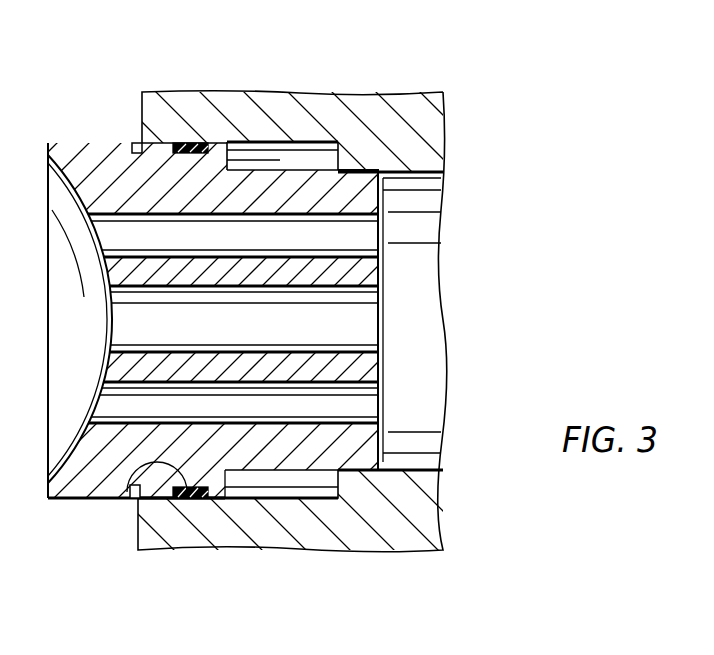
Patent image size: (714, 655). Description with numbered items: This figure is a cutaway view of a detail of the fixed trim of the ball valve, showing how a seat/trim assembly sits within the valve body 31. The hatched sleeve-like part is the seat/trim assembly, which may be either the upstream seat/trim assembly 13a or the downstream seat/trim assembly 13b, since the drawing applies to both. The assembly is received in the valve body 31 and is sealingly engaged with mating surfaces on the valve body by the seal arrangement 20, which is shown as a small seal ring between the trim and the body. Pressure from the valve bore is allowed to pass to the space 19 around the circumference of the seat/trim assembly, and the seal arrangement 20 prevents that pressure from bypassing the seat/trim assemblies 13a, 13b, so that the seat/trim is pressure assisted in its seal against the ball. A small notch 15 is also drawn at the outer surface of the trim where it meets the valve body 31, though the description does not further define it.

The upstream seat/trim assembly 13a is at (357, 327).
The downstream seat/trim assembly 13b is at (305, 183).
The notch 15 is at (137, 148).
The space 19 is at (97, 498).
The seal arrangement 20 is at (193, 502).
The valve body 31 is at (388, 523).